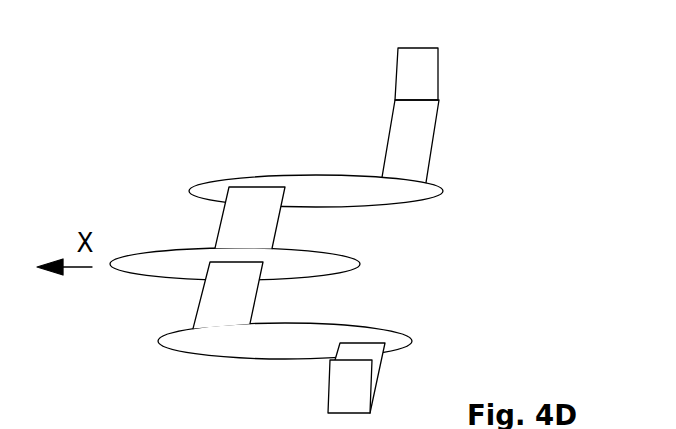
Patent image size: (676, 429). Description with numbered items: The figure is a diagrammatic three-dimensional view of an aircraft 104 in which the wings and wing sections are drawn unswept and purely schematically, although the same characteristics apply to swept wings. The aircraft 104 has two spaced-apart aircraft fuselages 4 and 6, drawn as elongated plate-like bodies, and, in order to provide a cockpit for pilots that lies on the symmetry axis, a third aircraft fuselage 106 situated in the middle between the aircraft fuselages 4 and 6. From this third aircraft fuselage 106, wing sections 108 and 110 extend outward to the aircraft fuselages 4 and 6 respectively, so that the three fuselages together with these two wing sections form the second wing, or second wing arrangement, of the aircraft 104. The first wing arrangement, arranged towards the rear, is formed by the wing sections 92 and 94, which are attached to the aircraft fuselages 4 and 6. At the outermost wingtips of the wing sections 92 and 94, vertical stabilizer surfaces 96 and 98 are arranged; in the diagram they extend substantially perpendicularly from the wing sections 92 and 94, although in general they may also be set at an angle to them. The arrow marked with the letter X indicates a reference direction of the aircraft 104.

The aircraft fuselage 4 is at (268, 343).
The aircraft fuselage 6 is at (328, 187).
The wing section 92 is at (375, 360).
The wing section 94 is at (407, 138).
The vertical stabilizer surface 96 is at (337, 392).
The vertical stabilizer surface 98 is at (420, 72).
The aircraft 104 is at (201, 141).
The third aircraft fuselage 106 is at (162, 267).
The wing section 108 is at (207, 302).
The wing section 110 is at (260, 218).